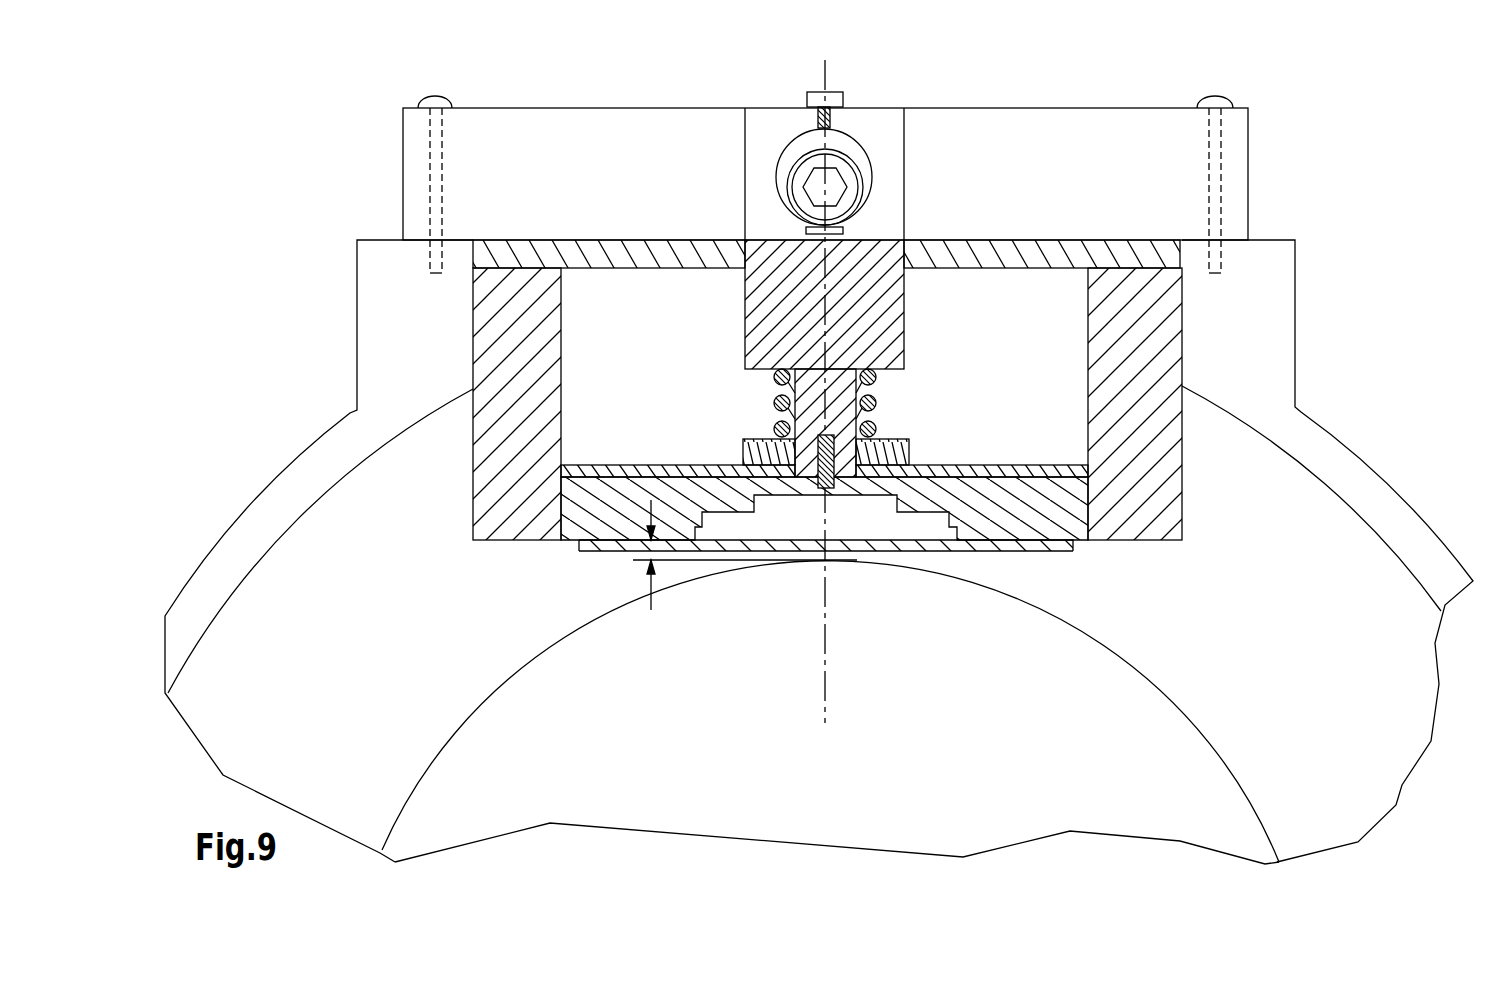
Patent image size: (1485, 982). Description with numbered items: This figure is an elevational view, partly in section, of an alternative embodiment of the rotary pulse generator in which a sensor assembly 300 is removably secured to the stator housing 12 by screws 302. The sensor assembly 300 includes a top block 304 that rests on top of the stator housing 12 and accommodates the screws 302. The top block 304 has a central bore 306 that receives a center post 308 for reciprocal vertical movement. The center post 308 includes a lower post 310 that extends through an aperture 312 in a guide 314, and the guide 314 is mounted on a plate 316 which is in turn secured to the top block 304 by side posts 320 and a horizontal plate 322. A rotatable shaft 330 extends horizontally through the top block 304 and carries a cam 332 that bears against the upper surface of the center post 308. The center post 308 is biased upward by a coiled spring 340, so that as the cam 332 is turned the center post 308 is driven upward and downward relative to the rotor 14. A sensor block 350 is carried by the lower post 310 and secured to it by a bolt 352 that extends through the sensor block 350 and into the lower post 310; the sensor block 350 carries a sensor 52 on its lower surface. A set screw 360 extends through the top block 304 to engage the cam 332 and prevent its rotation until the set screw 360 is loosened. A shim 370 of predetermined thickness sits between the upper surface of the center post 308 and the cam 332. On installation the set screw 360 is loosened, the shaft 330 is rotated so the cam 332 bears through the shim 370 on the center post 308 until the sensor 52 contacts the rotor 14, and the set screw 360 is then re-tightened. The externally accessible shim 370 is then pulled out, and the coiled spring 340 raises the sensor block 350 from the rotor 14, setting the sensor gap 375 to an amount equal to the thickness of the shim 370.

The stator housing 12 is at (300, 316).
The rotor 14 is at (512, 664).
The sensor 52 is at (1027, 553).
The sensor assembly 300 is at (553, 62).
The screws 302 is at (432, 93).
The top block 304 is at (572, 110).
The central bore 306 is at (905, 187).
The center post 308 is at (897, 335).
The lower post 310 is at (908, 452).
The aperture 312 is at (907, 478).
The guide 314 is at (757, 442).
The plate 316 is at (583, 473).
The side posts 320 is at (540, 330).
The horizontal plate 322 is at (530, 242).
The rotatable shaft 330 is at (847, 170).
The cam 332 is at (868, 168).
The coiled spring 340 is at (872, 430).
The sensor block 350 is at (605, 528).
The bolt 352 is at (845, 478).
The set screw 360 is at (815, 92).
The shim 370 is at (796, 222).
The sensor gap 375 is at (633, 560).